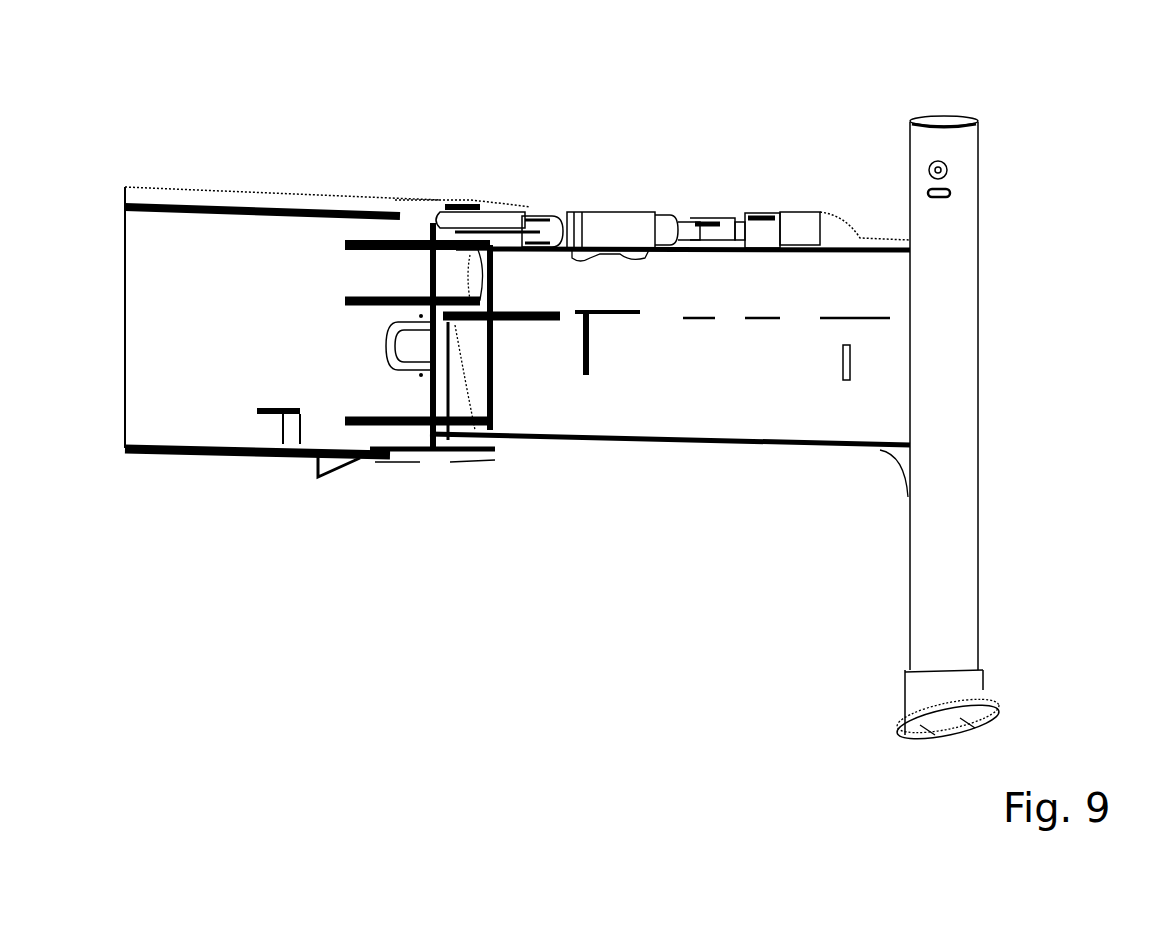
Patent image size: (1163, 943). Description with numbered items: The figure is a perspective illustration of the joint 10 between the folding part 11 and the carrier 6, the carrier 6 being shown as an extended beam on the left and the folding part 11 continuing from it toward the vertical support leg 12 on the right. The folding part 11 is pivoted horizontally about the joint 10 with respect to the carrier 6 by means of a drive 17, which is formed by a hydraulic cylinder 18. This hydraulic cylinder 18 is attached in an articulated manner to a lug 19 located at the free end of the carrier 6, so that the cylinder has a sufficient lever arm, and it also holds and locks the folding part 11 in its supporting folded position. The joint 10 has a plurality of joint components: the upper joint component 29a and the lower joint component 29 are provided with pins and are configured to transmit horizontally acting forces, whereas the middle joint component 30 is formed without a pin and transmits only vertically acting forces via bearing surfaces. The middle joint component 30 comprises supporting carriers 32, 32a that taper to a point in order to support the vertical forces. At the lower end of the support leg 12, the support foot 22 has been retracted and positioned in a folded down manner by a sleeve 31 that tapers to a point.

The carrier 6 is at (300, 285).
The joint 10 is at (458, 200).
The folding part 11 is at (808, 295).
The support leg 12 is at (940, 572).
The drive 17 is at (655, 185).
The hydraulic cylinder 18 is at (623, 228).
The lug 19 is at (530, 212).
The support foot 22 is at (922, 740).
The lower joint component 29 is at (432, 452).
The upper joint component 29a is at (490, 250).
The middle joint component 30 is at (458, 315).
The sleeve 31 is at (970, 682).
The supporting carrier 32 is at (452, 287).
The supporting carrier 32a is at (478, 358).